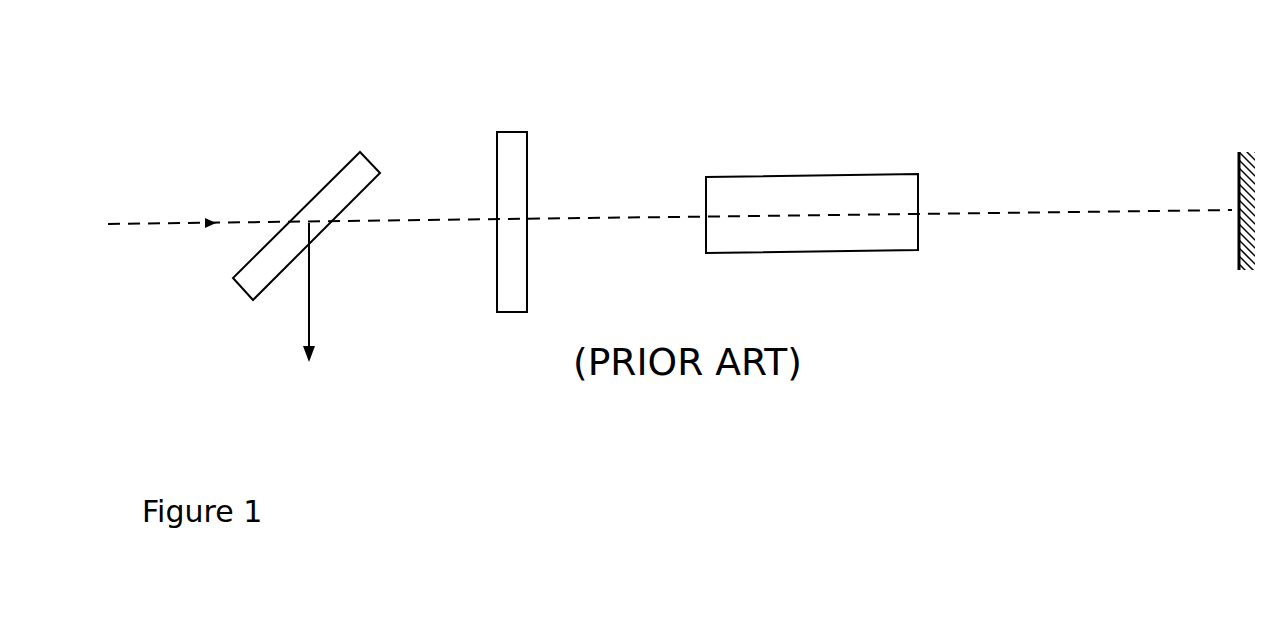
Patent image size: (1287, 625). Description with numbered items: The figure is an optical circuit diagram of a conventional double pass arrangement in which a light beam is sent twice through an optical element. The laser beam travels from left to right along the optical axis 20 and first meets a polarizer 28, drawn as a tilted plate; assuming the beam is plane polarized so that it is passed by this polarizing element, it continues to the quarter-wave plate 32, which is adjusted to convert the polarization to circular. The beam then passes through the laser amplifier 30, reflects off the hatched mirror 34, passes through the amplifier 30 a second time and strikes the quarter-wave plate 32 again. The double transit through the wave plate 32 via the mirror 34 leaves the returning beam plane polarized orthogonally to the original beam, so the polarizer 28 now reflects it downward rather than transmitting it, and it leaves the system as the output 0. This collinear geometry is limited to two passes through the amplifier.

The optical axis 20 is at (670, 172).
The polarizer 28 is at (370, 162).
The output 0 is at (316, 317).
The quarter-wave plate 32 is at (512, 132).
The laser amplifier 30 is at (803, 177).
The mirror 34 is at (1253, 148).